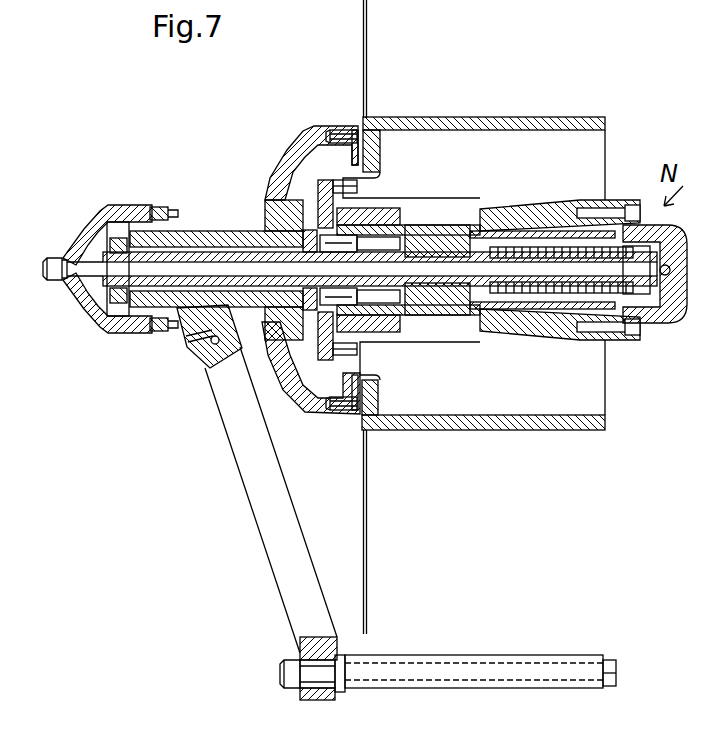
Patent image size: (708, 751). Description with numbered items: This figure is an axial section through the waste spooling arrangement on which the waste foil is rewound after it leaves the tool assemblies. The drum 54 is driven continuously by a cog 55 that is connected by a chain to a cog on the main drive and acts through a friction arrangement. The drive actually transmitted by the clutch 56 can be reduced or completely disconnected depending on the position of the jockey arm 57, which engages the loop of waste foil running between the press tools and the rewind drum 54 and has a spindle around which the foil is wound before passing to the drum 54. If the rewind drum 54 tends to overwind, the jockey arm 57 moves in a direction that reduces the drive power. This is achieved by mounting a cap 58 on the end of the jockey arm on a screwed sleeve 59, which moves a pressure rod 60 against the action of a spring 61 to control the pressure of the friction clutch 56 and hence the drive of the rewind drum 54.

The drum 54 is at (430, 117).
The cog 55 is at (306, 177).
The clutch 56 is at (388, 236).
The jockey arm 57 is at (277, 492).
The cap 58 is at (184, 232).
The screwed sleeve 59 is at (207, 243).
The pressure rod 60 is at (465, 320).
The spring 61 is at (545, 300).